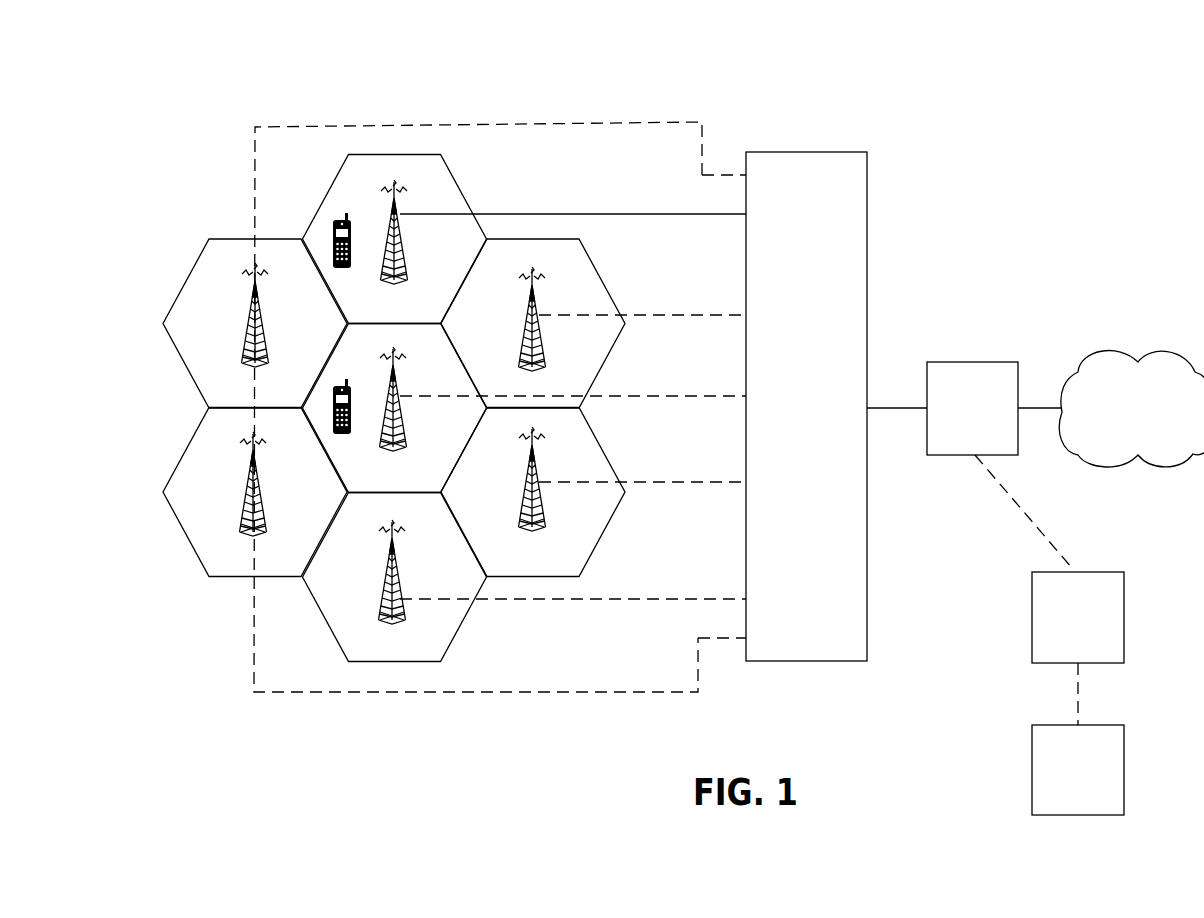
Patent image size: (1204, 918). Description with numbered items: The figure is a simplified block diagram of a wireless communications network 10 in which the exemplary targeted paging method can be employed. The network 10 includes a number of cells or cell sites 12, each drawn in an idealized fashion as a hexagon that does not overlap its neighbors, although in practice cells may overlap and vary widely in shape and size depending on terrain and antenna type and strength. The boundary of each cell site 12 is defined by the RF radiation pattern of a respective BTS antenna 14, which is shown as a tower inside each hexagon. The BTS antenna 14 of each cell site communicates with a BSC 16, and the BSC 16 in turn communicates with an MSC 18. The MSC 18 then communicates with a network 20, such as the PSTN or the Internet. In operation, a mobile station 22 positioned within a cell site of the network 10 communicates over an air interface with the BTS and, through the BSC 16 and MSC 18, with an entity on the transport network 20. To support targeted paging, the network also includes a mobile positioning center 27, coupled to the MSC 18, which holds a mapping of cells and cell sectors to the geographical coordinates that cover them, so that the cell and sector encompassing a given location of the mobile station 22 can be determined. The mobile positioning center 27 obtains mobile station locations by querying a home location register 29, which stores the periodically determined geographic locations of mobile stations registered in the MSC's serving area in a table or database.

The wireless communications network 10 is at (828, 102).
The cell site 12 is at (455, 173).
The BTS antenna 14 is at (403, 256).
The BSC 16 is at (867, 190).
The MSC 18 is at (973, 362).
The network 20 is at (1124, 352).
The mobile station 22 is at (338, 269).
The mobile positioning center 27 is at (1124, 612).
The home location register 29 is at (1124, 762).